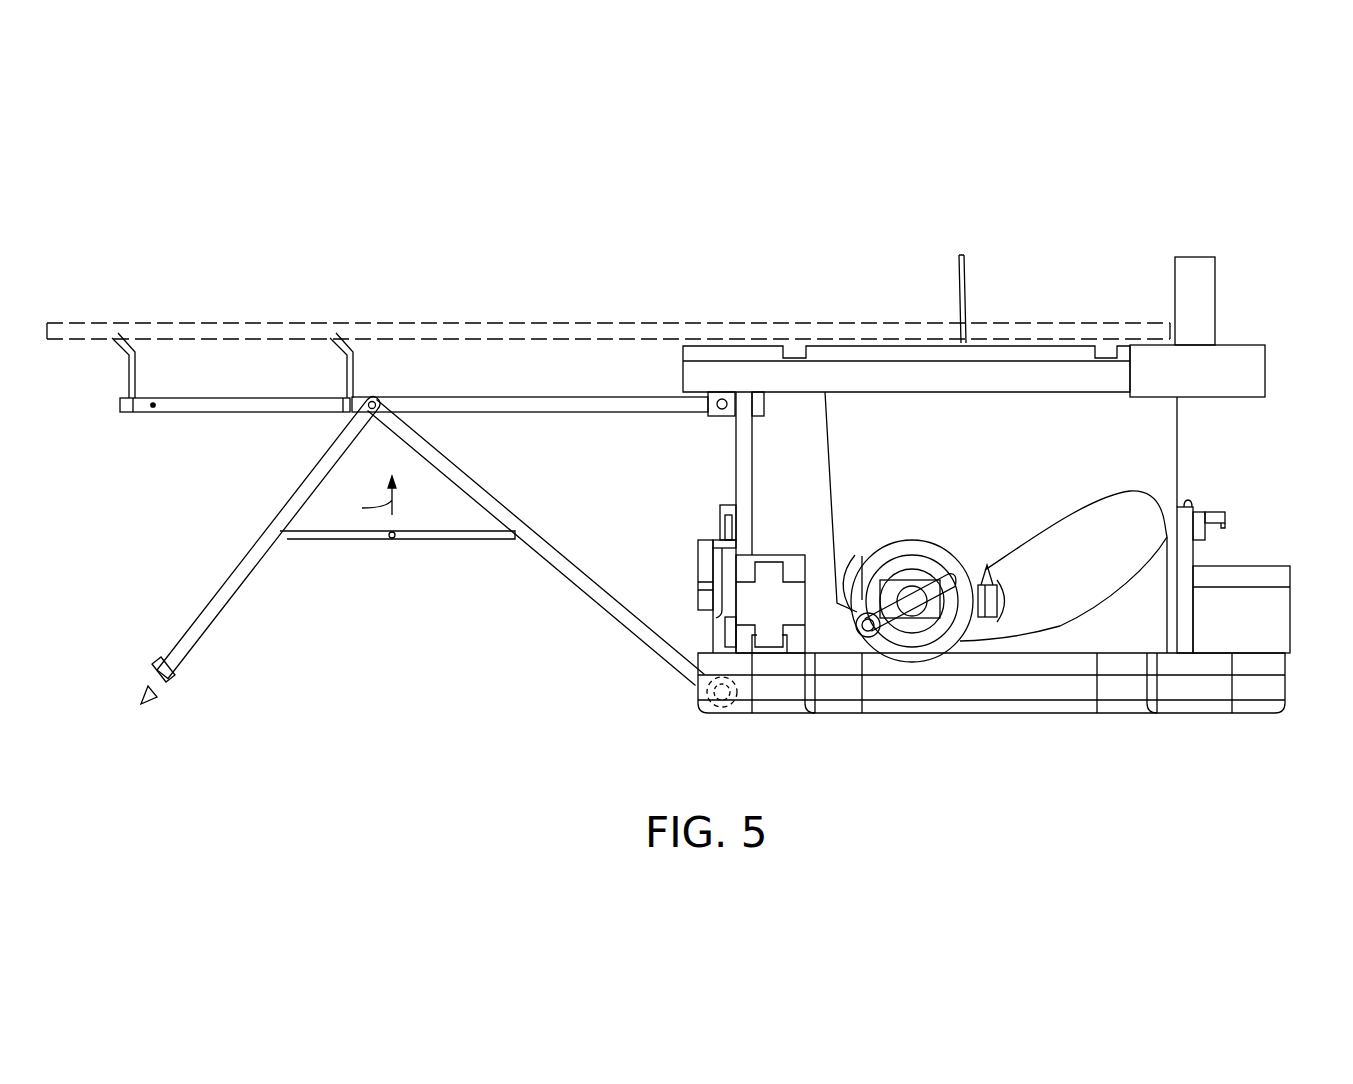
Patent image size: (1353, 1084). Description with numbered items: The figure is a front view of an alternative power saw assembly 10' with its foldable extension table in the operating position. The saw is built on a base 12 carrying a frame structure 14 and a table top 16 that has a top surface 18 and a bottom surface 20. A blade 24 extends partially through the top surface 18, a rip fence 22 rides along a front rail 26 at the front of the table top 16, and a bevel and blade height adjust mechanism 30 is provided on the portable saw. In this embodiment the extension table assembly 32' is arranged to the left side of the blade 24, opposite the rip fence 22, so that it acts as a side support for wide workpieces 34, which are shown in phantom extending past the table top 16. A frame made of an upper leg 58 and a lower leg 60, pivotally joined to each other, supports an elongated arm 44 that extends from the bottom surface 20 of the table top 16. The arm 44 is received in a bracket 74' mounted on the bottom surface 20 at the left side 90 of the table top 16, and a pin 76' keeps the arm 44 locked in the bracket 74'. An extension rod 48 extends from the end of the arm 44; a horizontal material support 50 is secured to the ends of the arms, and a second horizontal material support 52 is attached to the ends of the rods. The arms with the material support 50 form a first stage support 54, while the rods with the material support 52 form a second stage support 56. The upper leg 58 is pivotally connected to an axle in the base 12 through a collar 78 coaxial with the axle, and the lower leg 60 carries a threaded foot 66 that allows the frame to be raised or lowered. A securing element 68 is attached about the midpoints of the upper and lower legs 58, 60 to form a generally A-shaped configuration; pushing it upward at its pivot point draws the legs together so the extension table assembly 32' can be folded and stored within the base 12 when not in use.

The power saw assembly 10' is at (686, 455).
The base 12 is at (1260, 690).
The frame structure 14 is at (1040, 440).
The table top 16 is at (1000, 376).
The top surface 18 is at (845, 343).
The bottom surface 20 is at (785, 392).
The rip fence 22 is at (1237, 372).
The blade 24 is at (965, 281).
The front rail 26 is at (710, 378).
The bevel and blade height adjust mechanism 30 is at (909, 664).
The extension table assembly 32' is at (394, 444).
The workpiece 34 is at (77, 320).
The left arm 44 is at (465, 413).
The extension rod 48 is at (265, 397).
The horizontal material support 50 is at (345, 352).
The horizontal material support 52 is at (125, 348).
The first stage support 54 is at (456, 305).
The second stage support 56 is at (214, 318).
The upper leg 58 is at (493, 503).
The lower leg 60 is at (283, 519).
The foot 66 is at (148, 694).
The securing element 68 is at (332, 541).
The bracket 74' is at (724, 522).
The pin 76' is at (690, 421).
The collar 78 is at (723, 708).
The left side 90 is at (683, 357).